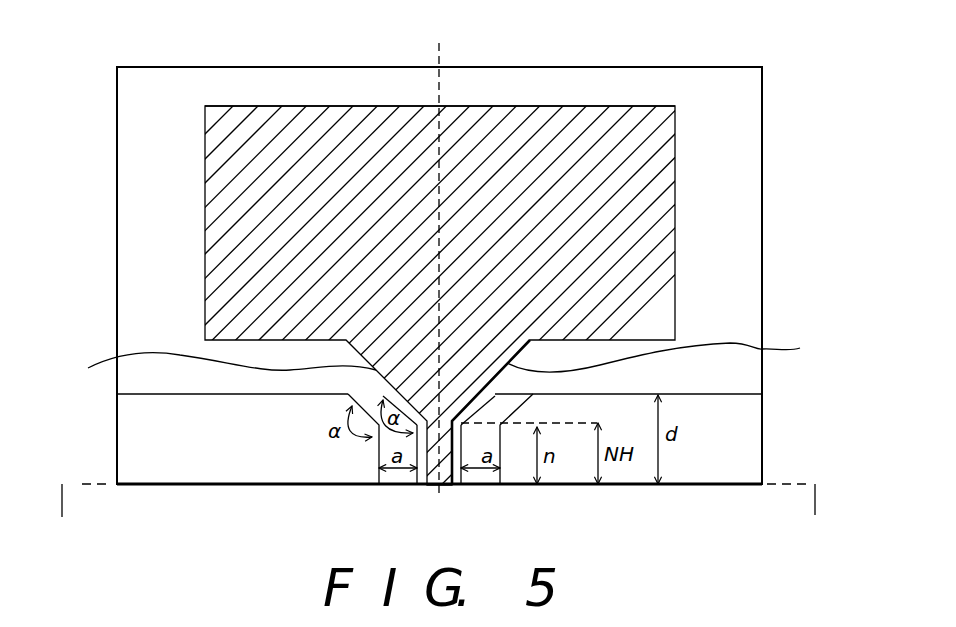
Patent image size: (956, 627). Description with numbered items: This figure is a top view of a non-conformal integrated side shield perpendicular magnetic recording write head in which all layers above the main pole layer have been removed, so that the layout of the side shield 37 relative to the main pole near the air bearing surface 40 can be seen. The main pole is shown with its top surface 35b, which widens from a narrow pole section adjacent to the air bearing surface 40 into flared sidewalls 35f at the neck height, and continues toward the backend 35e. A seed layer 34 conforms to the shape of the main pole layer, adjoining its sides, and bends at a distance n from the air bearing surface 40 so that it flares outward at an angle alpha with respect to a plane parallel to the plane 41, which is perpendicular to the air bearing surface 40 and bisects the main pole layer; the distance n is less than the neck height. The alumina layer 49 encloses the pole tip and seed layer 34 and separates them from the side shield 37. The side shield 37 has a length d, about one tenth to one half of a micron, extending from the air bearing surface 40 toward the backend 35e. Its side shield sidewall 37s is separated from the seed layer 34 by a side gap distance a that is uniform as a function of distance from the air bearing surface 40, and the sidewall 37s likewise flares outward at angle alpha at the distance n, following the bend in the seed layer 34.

The seed layer 34 is at (752, 240).
The top edge 35b is at (298, 133).
The backend 35e is at (600, 107).
The flared sidewalls 35f is at (445, 357).
The side shield 37 is at (132, 433).
The side shield sidewall 37s is at (378, 455).
The air bearing surface 40 is at (435, 515).
The plane bisecting the main pole layer 41 is at (451, 277).
The alumina layer 49 is at (398, 484).